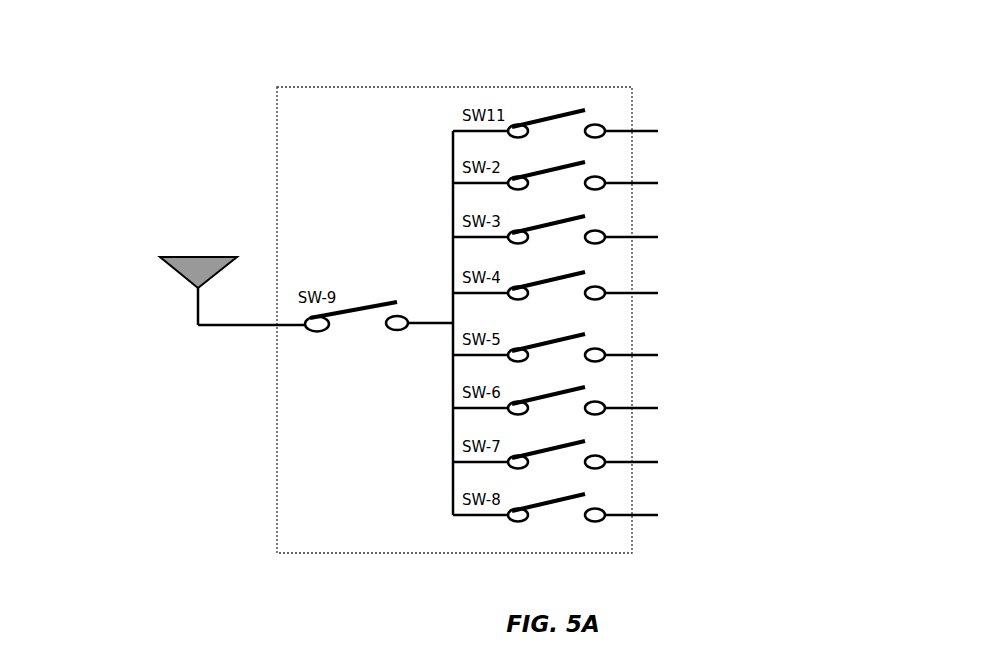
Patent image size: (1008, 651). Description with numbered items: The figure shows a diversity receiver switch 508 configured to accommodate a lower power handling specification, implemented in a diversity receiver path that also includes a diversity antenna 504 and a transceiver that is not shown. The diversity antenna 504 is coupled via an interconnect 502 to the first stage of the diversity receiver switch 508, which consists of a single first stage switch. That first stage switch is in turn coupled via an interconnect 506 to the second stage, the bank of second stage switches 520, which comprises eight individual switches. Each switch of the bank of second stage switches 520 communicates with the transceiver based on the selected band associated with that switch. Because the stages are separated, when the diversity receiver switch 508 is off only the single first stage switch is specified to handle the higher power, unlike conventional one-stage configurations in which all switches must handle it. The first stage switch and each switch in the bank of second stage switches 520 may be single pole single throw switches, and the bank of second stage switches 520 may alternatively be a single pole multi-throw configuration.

The interconnect 502 is at (222, 329).
The diversity antenna 504 is at (159, 264).
The interconnect 506 is at (432, 328).
The diversity receiver switch 508 is at (476, 85).
The bank of second stage switches 520 is at (449, 135).